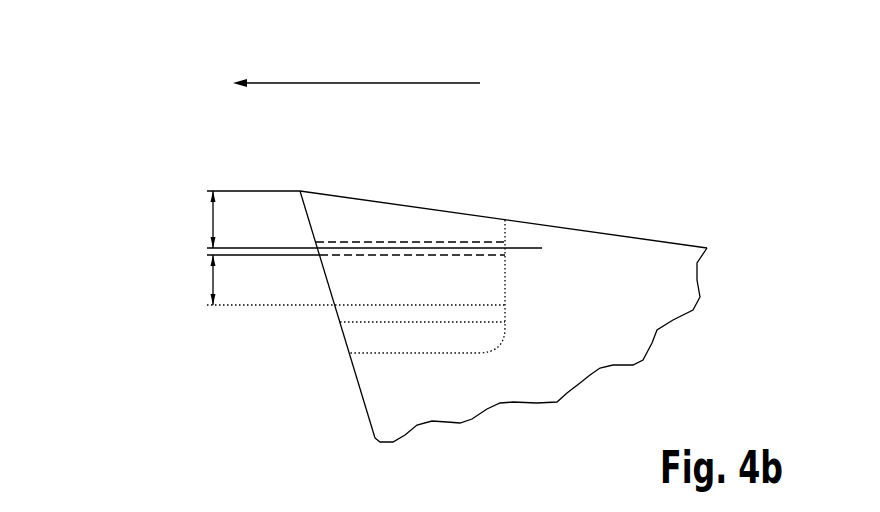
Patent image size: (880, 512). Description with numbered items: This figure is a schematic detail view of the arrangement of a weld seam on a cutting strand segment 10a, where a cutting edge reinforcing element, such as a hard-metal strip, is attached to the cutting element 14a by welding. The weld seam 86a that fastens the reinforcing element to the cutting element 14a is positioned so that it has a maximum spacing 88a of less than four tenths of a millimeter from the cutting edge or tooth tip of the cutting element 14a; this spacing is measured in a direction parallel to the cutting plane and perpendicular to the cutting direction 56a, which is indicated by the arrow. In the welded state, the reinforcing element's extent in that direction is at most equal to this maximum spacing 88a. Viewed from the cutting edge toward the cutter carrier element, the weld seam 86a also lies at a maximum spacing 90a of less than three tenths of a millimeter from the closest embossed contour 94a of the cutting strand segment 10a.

The cutting strand segment 10a is at (147, 120).
The cutting element 14a is at (675, 298).
The cutting direction 56a is at (355, 83).
The weld seam 86a is at (468, 242).
The maximum spacing 88a is at (213, 222).
The maximum spacing 90a is at (213, 282).
The embossed contour 94a is at (382, 312).